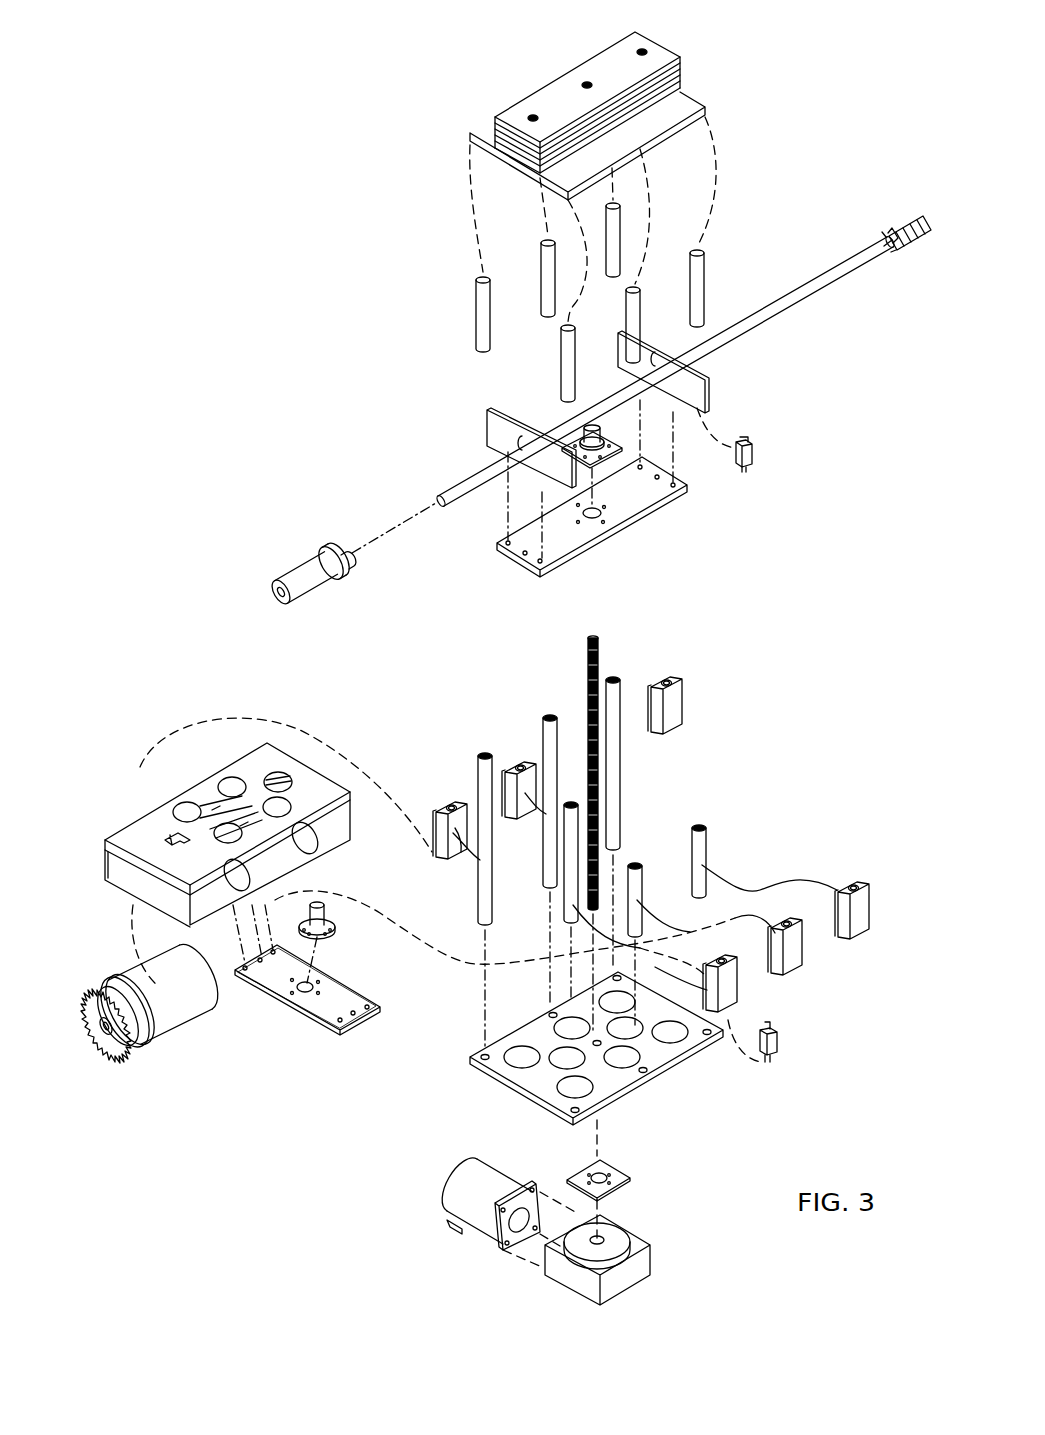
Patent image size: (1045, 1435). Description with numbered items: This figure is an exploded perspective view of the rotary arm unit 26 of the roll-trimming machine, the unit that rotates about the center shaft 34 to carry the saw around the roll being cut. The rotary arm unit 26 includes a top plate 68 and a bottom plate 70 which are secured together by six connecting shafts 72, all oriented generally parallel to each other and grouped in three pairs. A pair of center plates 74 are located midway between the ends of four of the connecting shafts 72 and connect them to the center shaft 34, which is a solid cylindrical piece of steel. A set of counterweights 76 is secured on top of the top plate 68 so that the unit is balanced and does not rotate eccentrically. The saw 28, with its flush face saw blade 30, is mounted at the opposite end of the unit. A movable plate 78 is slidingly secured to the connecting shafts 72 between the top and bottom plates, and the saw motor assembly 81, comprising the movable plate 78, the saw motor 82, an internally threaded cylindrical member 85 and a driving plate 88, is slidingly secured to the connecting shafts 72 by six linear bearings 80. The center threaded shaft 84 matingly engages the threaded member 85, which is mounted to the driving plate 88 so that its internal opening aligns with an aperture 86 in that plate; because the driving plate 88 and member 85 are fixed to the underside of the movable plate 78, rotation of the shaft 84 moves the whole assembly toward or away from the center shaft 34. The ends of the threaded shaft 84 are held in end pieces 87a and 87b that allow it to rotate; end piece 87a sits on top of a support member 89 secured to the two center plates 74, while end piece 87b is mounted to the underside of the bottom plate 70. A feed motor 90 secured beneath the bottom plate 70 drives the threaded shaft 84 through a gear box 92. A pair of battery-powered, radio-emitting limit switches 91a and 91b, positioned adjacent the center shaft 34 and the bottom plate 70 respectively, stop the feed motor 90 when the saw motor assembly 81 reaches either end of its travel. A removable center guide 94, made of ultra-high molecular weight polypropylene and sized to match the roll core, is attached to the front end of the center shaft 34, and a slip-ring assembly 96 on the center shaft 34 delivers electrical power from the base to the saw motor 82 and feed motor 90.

The rotary arm unit 26 is at (283, 280).
The saw 28 is at (175, 1070).
The flush face saw blade 30 is at (108, 1058).
The center shaft 34 is at (807, 288).
The top plate 68 is at (487, 130).
The bottom plate 70 is at (535, 1080).
The connecting shafts 72 is at (478, 312).
The center plates 74 is at (490, 433).
The counterweights 76 is at (607, 60).
The movable plate 78 is at (137, 828).
The linear bearings 80 is at (678, 708).
The saw motor assembly 81 is at (190, 692).
The saw motor 82 is at (195, 1010).
The center threaded shaft 84 is at (590, 655).
The internally threaded cylindrical member 85 is at (330, 922).
The aperture 86 is at (292, 985).
The end piece 87a is at (577, 432).
The end piece 87b is at (620, 1180).
The driving plate 88 is at (366, 1004).
The support member 89 is at (672, 510).
The feed motor 90 is at (465, 1165).
The limit switch 91a is at (752, 452).
The limit switch 91b is at (778, 1040).
The gear box 92 is at (640, 1247).
The center guide 94 is at (303, 570).
The slip-ring assembly 96 is at (897, 214).